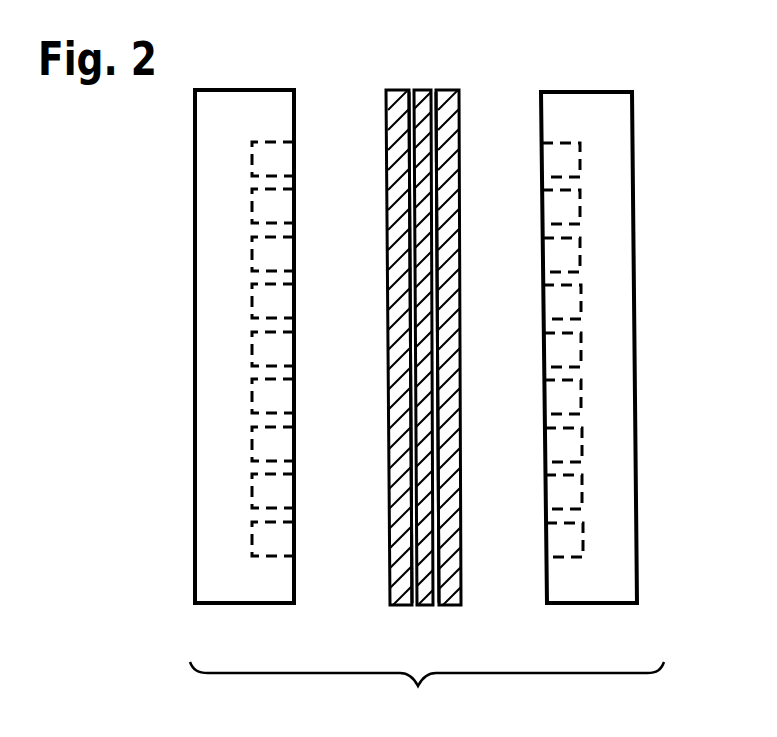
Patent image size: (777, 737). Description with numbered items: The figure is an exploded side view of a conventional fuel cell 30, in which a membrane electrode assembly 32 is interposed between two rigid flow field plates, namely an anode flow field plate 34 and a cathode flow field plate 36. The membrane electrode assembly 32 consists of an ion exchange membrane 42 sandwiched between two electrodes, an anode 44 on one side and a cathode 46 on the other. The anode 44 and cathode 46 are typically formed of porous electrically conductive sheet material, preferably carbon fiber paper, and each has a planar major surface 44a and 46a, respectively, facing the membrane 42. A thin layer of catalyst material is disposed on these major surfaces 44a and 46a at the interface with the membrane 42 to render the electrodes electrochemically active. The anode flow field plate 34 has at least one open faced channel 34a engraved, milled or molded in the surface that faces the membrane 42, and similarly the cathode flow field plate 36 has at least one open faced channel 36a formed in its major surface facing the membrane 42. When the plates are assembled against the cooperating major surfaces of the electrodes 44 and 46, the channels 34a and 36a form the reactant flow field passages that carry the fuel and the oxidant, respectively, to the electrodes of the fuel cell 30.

The fuel cell 30 is at (608, 82).
The membrane electrode assembly 32 is at (462, 617).
The anode flow field plate 34 is at (620, 266).
The open faced channel 34a is at (582, 349).
The cathode flow field plate 36 is at (206, 213).
The open faced channel 36a is at (252, 347).
The ion exchange membrane 42 is at (424, 95).
The anode 44 is at (440, 96).
The planar major surface 44a is at (429, 96).
The cathode 46 is at (407, 96).
The planar major surface 46a is at (410, 97).